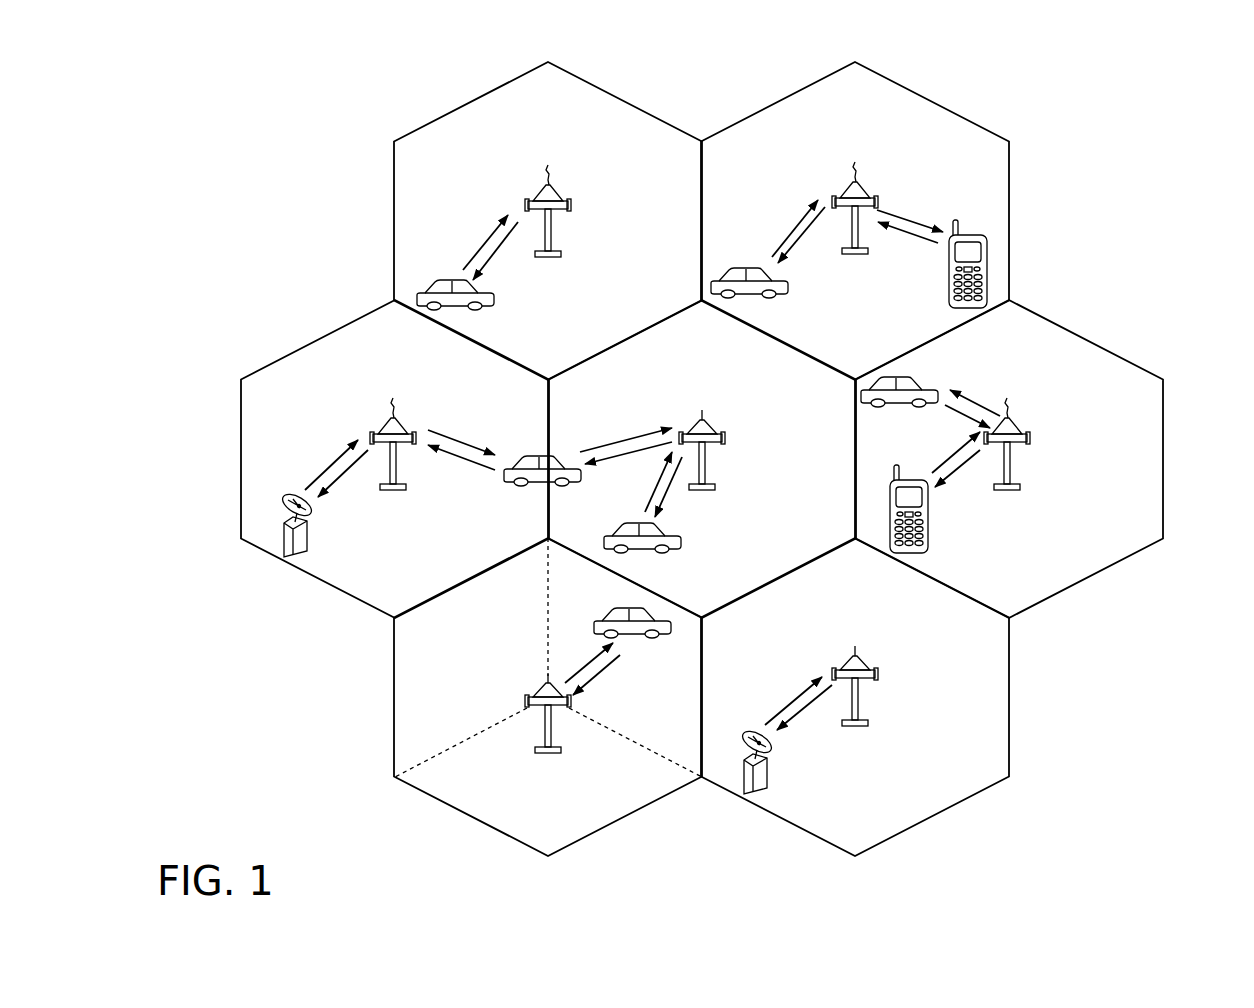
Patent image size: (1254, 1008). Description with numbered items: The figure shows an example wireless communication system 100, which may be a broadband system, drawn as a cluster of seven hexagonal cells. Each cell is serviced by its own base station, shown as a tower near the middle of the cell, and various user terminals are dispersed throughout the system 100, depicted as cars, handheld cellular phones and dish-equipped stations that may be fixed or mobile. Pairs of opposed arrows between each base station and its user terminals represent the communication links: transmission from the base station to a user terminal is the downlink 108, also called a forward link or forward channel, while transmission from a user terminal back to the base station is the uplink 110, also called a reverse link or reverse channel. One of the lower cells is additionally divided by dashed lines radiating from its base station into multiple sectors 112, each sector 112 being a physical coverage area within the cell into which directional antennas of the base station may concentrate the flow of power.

The wireless communication system 100 is at (733, 456).
The downlink 108 is at (497, 253).
The uplink 110 is at (490, 244).
The sector 112 is at (601, 812).